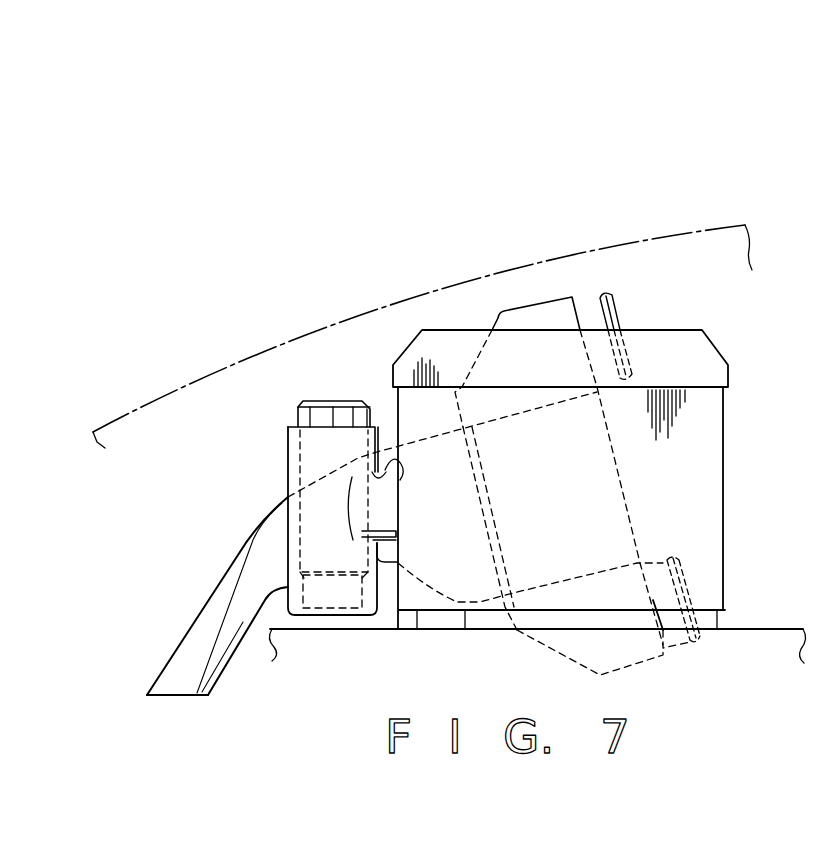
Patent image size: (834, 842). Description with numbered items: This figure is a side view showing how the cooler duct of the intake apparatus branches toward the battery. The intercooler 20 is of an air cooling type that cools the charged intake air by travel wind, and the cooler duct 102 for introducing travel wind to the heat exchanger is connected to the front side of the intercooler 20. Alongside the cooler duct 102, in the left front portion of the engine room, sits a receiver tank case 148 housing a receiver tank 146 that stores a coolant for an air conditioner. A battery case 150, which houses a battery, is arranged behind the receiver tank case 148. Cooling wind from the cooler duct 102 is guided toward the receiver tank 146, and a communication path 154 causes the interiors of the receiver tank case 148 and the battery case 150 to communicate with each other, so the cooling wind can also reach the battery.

The intercooler 20 is at (625, 313).
The cooler duct 102 is at (233, 551).
The receiver tank 146 is at (298, 413).
The receiver tank case 148 is at (288, 460).
The battery case 150 is at (722, 462).
The communication path 154 is at (401, 466).